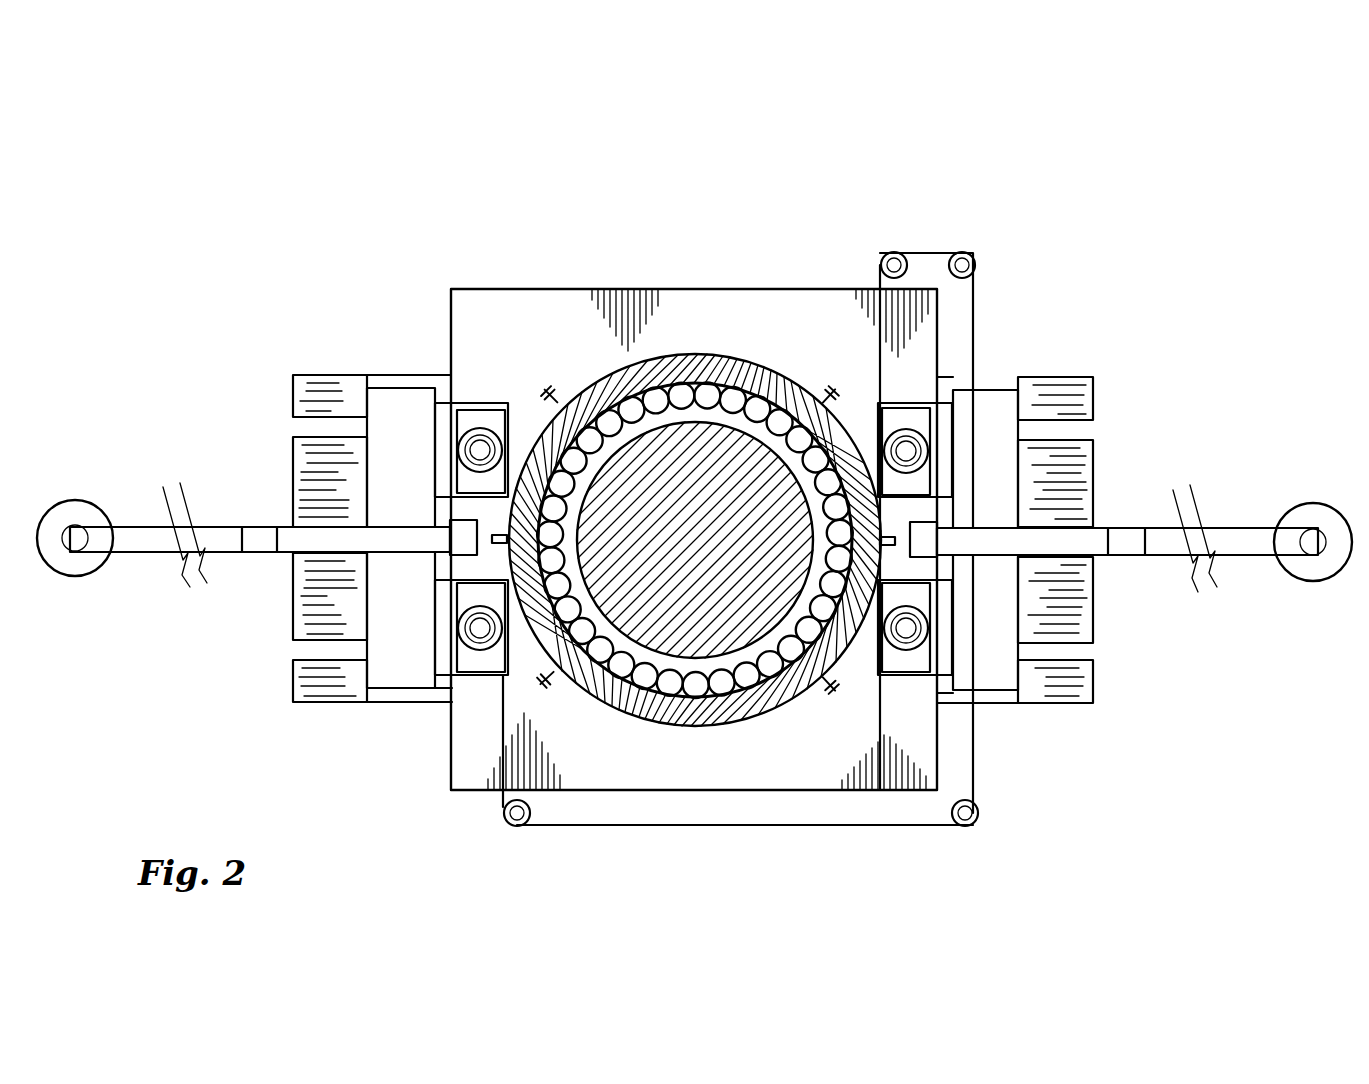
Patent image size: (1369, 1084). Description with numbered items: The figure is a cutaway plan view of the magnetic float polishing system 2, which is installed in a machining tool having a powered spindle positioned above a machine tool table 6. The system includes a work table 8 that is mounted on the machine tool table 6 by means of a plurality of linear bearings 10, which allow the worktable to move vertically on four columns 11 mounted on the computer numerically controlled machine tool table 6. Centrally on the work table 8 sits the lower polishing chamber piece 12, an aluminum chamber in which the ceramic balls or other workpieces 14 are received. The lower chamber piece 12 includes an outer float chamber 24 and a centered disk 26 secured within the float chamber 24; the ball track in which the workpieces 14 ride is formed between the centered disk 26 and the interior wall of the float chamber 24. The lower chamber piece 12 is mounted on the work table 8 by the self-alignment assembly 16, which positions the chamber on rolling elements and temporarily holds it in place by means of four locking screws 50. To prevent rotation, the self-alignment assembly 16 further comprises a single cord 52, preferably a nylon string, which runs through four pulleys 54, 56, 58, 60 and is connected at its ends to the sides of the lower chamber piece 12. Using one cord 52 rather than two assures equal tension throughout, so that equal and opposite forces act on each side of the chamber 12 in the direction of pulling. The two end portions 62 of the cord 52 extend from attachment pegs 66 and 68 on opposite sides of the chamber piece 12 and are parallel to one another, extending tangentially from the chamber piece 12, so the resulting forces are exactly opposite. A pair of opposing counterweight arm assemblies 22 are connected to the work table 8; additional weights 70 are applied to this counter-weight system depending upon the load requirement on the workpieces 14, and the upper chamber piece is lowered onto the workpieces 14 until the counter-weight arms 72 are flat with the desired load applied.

The magnetic float polishing system 2 is at (503, 280).
The machine tool table 6 is at (312, 690).
The work table 8 is at (672, 289).
The linear bearings 10 is at (460, 450).
The columns 11 is at (478, 446).
The lower polishing chamber piece 12 is at (828, 425).
The workpieces 14 is at (752, 402).
The self-alignment assembly 16 is at (880, 322).
The counterweight arm assemblies 22 is at (158, 545).
The outer float chamber 24 is at (623, 373).
The centered disk 26 is at (722, 625).
The locking screws 50 is at (545, 390).
The cord 52 is at (782, 827).
The pulley 54 is at (507, 820).
The pulley 56 is at (975, 822).
The pulley 58 is at (965, 256).
The pulley 60 is at (888, 257).
The end portions of the cord 62 is at (880, 352).
The attachment peg 66 is at (492, 535).
The attachment peg 68 is at (937, 565).
The additional weights 70 is at (72, 502).
The counter-weight arms 72 is at (215, 522).